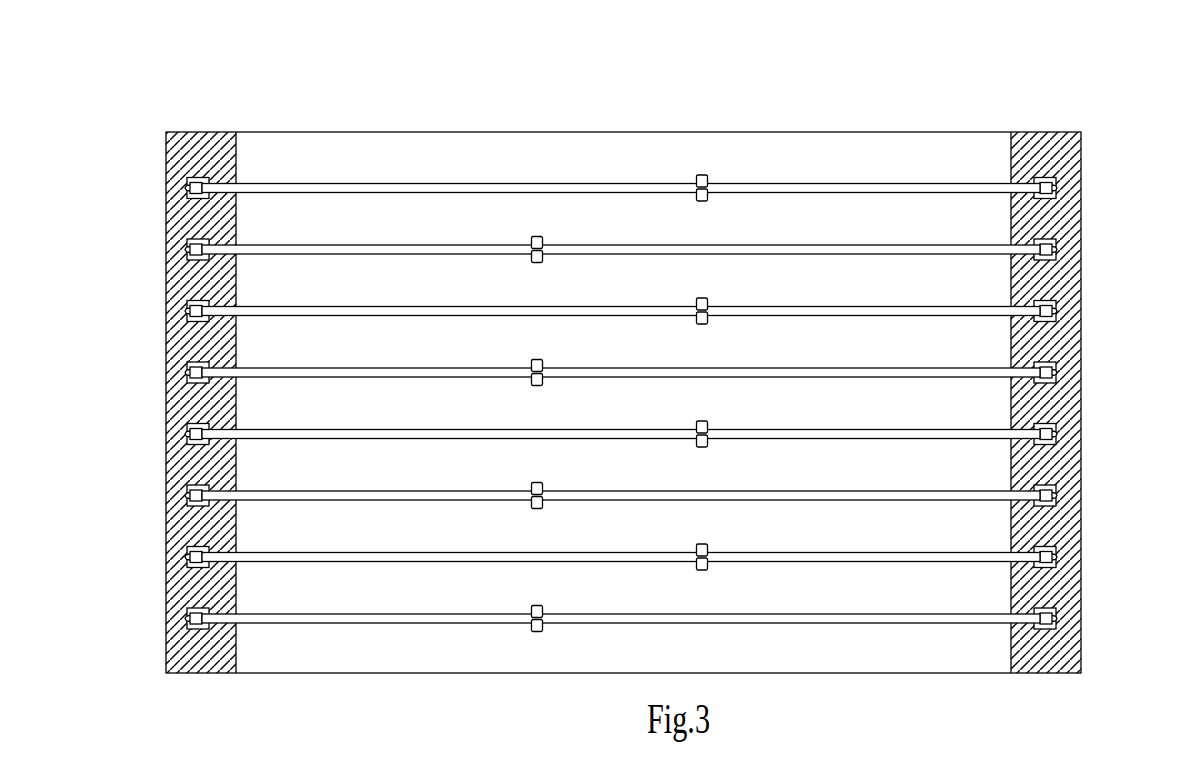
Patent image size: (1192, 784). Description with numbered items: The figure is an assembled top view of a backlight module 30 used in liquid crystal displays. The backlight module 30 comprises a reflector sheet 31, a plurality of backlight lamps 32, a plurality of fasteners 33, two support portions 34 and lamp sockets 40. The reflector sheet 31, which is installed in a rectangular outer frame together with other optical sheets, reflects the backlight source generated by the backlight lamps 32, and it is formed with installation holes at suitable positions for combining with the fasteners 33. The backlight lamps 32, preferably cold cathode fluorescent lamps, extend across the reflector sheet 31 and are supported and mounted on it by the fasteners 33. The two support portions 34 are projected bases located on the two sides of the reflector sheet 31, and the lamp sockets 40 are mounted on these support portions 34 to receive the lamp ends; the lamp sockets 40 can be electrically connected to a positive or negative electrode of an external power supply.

The backlight module 30 is at (189, 78).
The reflector sheet 31 is at (670, 349).
The backlight lamp 32 is at (551, 122).
The fastener 33 is at (707, 175).
The support portion 34 is at (1081, 204).
The lamp socket 40 is at (186, 184).